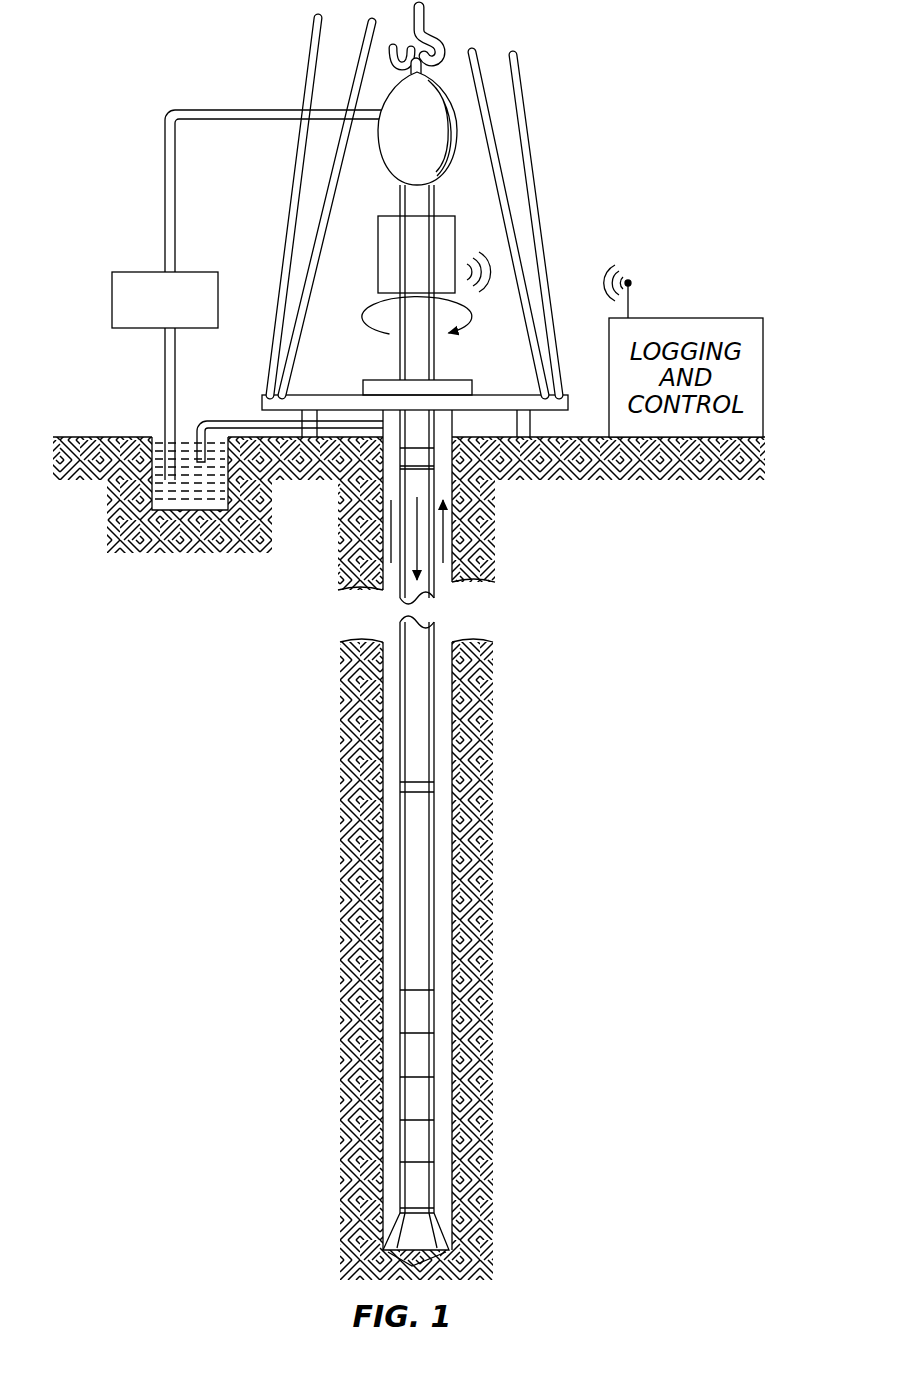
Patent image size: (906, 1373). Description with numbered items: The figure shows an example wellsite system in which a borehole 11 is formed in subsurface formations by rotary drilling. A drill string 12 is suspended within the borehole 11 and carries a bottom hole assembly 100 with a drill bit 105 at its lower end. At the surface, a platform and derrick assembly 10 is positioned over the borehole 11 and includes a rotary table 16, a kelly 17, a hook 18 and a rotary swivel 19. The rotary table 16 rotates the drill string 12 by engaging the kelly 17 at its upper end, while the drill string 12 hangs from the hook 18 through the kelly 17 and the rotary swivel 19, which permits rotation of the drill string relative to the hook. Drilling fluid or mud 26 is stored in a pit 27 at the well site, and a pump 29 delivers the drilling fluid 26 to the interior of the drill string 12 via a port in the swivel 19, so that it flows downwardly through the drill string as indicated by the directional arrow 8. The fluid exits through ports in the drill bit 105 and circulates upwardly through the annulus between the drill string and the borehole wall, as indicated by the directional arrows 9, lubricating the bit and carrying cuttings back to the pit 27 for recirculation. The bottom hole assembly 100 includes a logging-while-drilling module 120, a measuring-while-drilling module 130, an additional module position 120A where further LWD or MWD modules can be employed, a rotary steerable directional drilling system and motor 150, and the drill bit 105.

The platform and derrick assembly 10 is at (562, 128).
The hook 18 is at (427, 22).
The rotary swivel 19 is at (413, 148).
The kelly 17 is at (417, 353).
The rotary table 16 is at (447, 392).
The drill string 12 is at (412, 430).
The borehole 11 is at (445, 423).
The directional arrows 9 is at (445, 533).
The directional arrow 8 is at (417, 555).
The pump 29 is at (135, 328).
The pit 27 is at (155, 433).
The drilling fluid 26 is at (188, 510).
The bottom hole assembly 100 is at (317, 952).
The logging-while-drilling module 120 is at (423, 1058).
The measuring-while-drilling module 130 is at (423, 1102).
The additional LWD/MWD module 120A is at (423, 1147).
The rotary steerable directional drilling system and motor 150 is at (423, 1191).
The drill bit 105 is at (423, 1239).